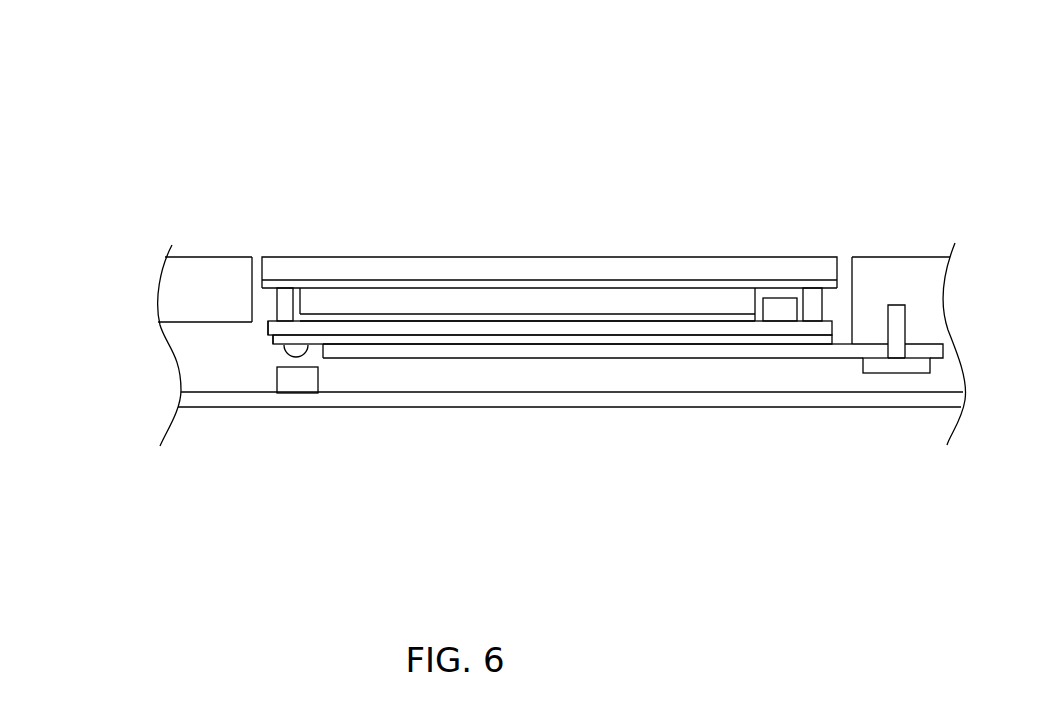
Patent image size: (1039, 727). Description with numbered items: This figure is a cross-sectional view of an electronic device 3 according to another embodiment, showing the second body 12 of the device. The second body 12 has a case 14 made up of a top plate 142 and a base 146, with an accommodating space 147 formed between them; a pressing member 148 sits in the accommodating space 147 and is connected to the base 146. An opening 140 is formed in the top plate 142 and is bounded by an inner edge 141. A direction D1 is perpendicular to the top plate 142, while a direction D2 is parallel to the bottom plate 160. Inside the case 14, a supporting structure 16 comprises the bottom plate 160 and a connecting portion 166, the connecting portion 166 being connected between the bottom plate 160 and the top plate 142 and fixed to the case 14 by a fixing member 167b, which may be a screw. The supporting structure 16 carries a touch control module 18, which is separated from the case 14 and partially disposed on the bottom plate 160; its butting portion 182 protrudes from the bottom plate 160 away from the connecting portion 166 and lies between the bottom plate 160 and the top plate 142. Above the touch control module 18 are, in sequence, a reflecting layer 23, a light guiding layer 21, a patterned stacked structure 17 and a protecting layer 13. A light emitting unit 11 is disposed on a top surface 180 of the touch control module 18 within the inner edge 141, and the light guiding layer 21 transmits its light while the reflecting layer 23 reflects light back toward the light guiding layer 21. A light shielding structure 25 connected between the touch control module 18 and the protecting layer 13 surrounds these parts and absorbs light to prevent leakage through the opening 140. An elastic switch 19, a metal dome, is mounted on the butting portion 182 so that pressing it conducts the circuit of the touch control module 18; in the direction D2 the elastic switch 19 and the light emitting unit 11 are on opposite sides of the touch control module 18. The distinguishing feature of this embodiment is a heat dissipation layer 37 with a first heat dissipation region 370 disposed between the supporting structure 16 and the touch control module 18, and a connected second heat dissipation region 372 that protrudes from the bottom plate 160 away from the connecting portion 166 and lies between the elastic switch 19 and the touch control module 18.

The electronic device 3 is at (56, 31).
The second body 12 is at (128, 164).
The case 14 is at (348, 48).
The supporting structure 16 is at (225, 48).
The opening 140 is at (258, 245).
The inner edge 141 is at (256, 302).
The top plate 142 is at (898, 275).
The protecting layer 13 is at (448, 272).
The patterned stacked structure 17 is at (502, 284).
The light guiding layer 21 is at (557, 300).
The reflecting layer 23 is at (627, 312).
The top surface 180 is at (704, 318).
The light emitting unit 11 is at (776, 306).
The light shielding structure 25 is at (285, 300).
The touch control module 18 is at (587, 328).
The first heat dissipation region 370 is at (688, 341).
The butting portion 182 is at (267, 328).
The bottom plate 160 is at (648, 351).
The connecting portion 166 is at (876, 352).
The fixing member 167b is at (913, 365).
The heat dissipation layer 37 is at (490, 348).
The second heat dissipation region 372 is at (323, 357).
The elastic switch 19 is at (302, 355).
The pressing member 148 is at (288, 378).
The base 146 is at (425, 399).
The accommodating space 147 is at (200, 352).
The direction D1 is at (875, 40).
The direction D2 is at (960, 295).